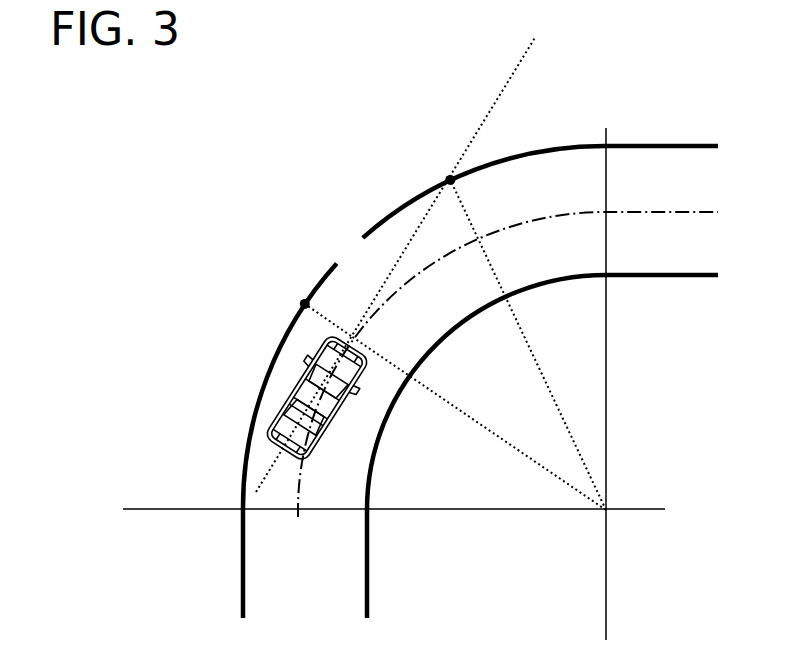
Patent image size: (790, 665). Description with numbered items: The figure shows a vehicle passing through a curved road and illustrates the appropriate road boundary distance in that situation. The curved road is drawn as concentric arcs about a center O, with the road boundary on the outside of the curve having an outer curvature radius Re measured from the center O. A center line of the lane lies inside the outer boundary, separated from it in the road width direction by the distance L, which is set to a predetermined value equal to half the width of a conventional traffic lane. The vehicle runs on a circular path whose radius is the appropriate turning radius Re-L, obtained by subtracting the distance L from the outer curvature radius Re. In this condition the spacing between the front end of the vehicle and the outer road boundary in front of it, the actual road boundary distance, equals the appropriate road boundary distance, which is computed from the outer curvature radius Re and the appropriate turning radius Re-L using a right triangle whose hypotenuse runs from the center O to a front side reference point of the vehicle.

The center O is at (394, 384).
The outer curvature radius Re is at (542, 372).
The appropriate turning radius Re-L is at (492, 432).
The distance L is at (318, 307).